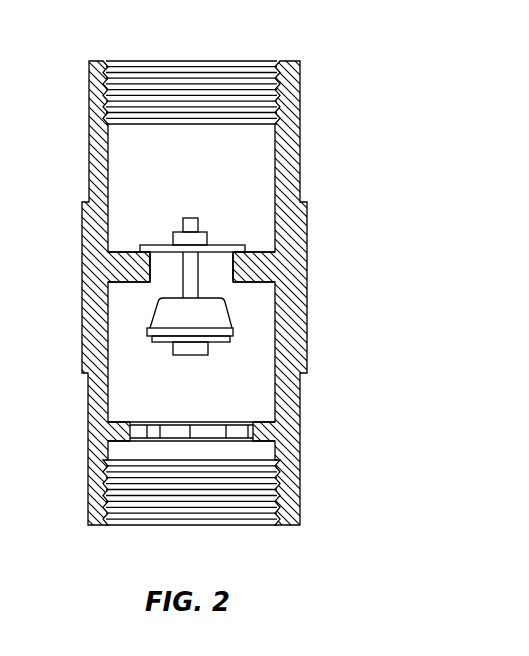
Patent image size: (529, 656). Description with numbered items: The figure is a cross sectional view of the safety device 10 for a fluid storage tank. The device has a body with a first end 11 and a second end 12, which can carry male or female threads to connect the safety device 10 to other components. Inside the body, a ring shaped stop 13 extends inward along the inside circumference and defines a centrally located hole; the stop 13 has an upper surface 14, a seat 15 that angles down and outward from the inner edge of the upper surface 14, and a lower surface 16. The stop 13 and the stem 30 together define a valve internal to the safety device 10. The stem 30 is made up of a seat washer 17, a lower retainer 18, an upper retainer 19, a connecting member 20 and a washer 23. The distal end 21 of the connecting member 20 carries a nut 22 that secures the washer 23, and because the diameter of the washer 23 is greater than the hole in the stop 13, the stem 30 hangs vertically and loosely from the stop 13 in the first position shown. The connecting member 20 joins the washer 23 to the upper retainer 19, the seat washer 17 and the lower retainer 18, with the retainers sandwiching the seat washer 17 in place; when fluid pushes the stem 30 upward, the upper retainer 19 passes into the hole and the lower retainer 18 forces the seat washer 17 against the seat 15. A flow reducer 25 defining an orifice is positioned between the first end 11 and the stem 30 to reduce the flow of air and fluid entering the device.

The safety device 10 is at (362, 173).
The first end 11 is at (255, 525).
The second end 12 is at (232, 62).
The stop 13 is at (128, 281).
The upper surface 14 is at (125, 268).
The seat 15 is at (157, 265).
The lower surface 16 is at (130, 283).
The seat washer 17 is at (232, 338).
The lower retainer 18 is at (236, 345).
The upper retainer 19 is at (231, 328).
The connecting member 20 is at (207, 353).
The distal end 21 is at (194, 218).
The nut 22 is at (207, 233).
The washer 23 is at (236, 246).
The flow reducer 25 is at (115, 432).
The stem 30 is at (140, 352).